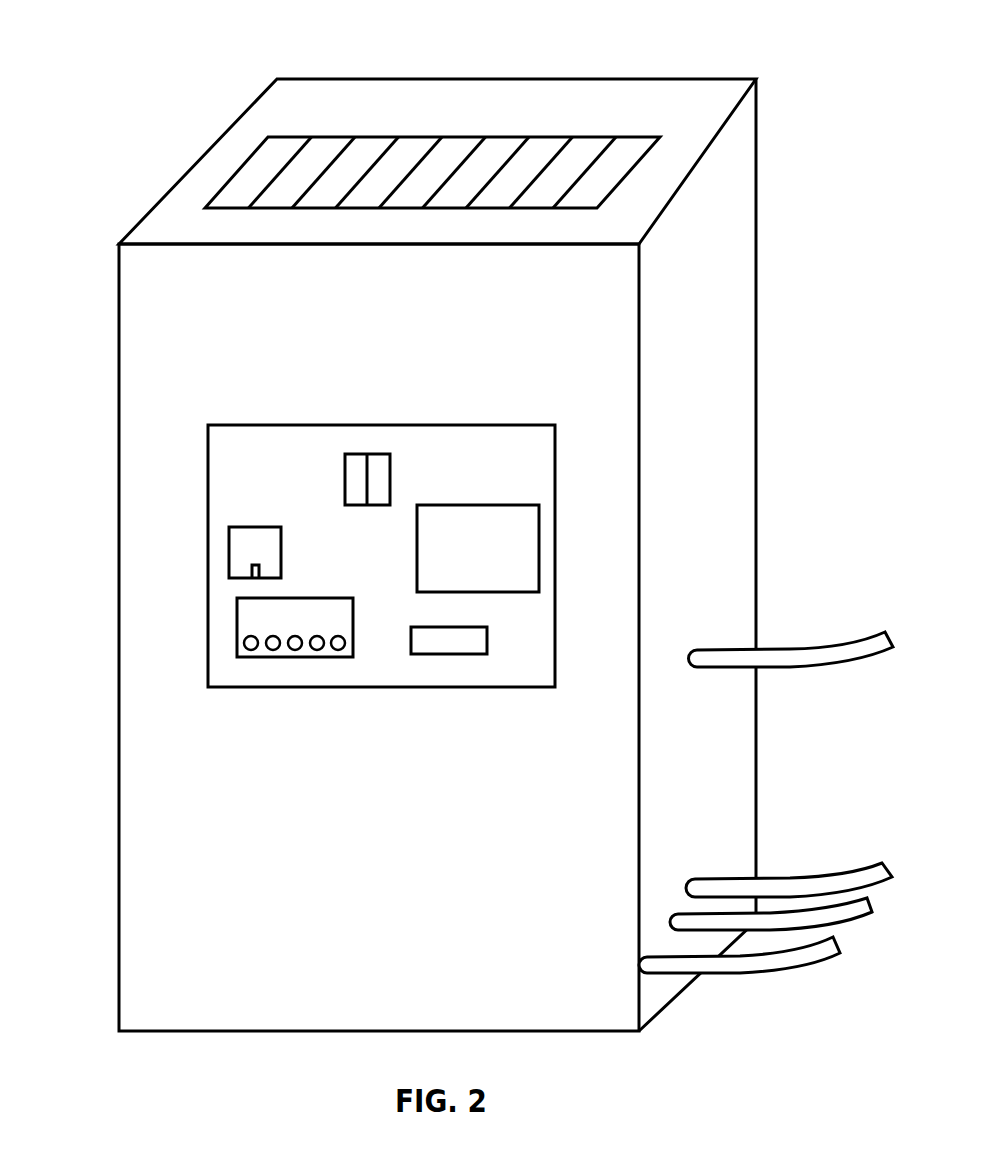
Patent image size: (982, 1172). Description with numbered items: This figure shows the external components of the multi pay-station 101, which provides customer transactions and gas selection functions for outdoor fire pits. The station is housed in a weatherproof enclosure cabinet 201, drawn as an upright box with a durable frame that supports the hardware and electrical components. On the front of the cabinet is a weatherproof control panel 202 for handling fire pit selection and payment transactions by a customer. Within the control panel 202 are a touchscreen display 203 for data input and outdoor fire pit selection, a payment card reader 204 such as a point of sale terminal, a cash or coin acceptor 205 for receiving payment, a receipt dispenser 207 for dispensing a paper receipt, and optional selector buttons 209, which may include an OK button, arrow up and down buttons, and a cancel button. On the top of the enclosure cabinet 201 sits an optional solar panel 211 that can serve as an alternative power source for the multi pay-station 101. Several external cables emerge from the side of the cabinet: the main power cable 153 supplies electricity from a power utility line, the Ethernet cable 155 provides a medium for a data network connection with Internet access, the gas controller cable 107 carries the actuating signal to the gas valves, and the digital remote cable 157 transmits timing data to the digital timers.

The multi pay-station 101 is at (262, 66).
The weatherproof enclosure cabinet 201 is at (135, 400).
The weatherproof control panel 202 is at (373, 418).
The touchscreen display 203 is at (483, 502).
The payment card reader 204 is at (350, 463).
The cash or coin acceptor 205 is at (277, 528).
The receipt dispenser 207 is at (488, 643).
The selector buttons 209 is at (348, 625).
The solar panel 211 is at (603, 138).
The gas controller cable 107 is at (800, 972).
The main power cable 153 is at (800, 873).
The Ethernet cable 155 is at (837, 917).
The digital remote cable 157 is at (802, 643).